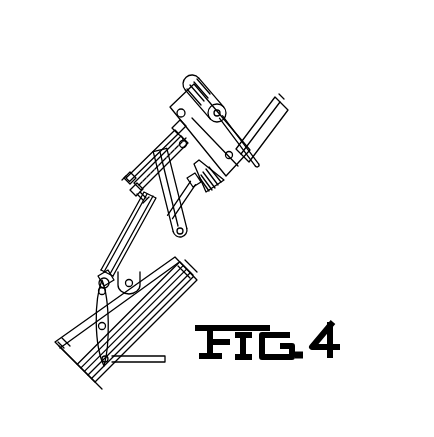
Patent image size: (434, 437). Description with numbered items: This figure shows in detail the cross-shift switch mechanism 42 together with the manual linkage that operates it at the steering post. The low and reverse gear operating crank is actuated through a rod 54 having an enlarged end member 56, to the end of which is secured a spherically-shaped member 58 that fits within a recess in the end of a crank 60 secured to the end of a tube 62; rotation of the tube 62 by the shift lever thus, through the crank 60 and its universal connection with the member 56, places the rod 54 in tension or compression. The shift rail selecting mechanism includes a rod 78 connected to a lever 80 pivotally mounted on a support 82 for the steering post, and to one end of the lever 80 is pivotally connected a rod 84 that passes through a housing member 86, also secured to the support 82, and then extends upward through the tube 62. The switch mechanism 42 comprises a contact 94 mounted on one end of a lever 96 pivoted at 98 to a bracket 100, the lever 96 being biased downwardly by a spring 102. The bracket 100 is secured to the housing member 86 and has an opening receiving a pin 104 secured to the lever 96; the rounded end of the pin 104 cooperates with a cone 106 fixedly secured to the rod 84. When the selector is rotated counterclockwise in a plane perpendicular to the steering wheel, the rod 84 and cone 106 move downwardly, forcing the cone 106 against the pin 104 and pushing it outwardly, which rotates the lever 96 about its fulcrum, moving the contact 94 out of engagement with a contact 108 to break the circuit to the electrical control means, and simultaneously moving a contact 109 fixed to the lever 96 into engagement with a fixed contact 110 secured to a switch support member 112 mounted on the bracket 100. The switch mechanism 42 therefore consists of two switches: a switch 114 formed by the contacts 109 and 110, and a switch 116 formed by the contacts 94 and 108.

The switch mechanism 42 is at (137, 153).
The rod 54 is at (262, 160).
The enlarged end member 56 is at (213, 101).
The spherically-shaped member 58 is at (174, 108).
The crank 60 is at (180, 109).
The tube 62 is at (282, 104).
The rod 78 is at (160, 364).
The lever 80 is at (100, 350).
The support 82 is at (70, 343).
The rod 84 is at (194, 213).
The housing member 86 is at (148, 250).
The contact 94 is at (143, 201).
The lever 96 is at (138, 197).
The pivot 98 is at (180, 141).
The bracket 100 is at (241, 169).
The spring 102 is at (229, 136).
The pin 104 is at (206, 197).
The cone 106 is at (224, 186).
The contact 108 is at (154, 208).
The contact 109 is at (130, 192).
The fixed contact 110 is at (127, 181).
The switch support member 112 is at (160, 140).
The switch 114 is at (122, 183).
The switch 116 is at (135, 222).